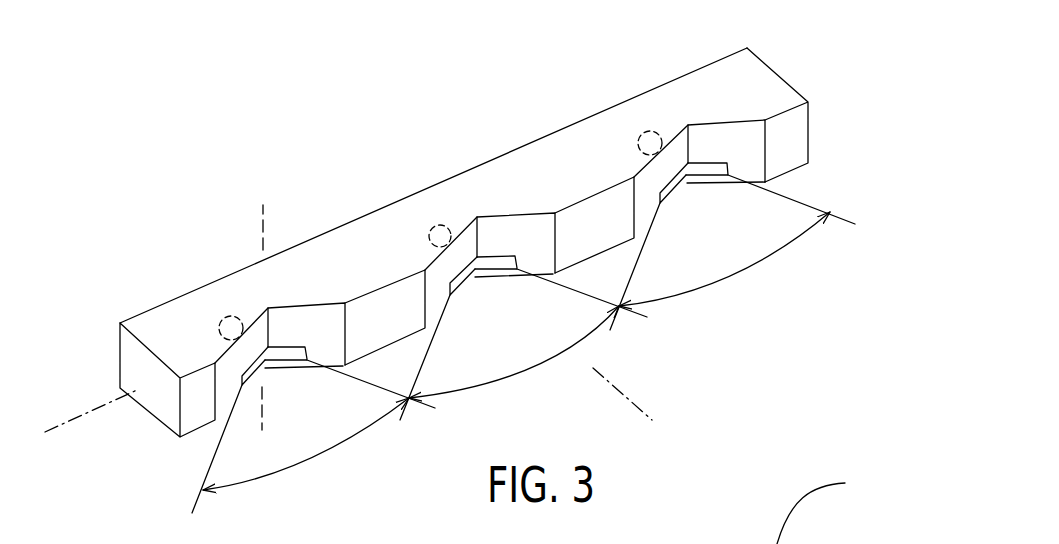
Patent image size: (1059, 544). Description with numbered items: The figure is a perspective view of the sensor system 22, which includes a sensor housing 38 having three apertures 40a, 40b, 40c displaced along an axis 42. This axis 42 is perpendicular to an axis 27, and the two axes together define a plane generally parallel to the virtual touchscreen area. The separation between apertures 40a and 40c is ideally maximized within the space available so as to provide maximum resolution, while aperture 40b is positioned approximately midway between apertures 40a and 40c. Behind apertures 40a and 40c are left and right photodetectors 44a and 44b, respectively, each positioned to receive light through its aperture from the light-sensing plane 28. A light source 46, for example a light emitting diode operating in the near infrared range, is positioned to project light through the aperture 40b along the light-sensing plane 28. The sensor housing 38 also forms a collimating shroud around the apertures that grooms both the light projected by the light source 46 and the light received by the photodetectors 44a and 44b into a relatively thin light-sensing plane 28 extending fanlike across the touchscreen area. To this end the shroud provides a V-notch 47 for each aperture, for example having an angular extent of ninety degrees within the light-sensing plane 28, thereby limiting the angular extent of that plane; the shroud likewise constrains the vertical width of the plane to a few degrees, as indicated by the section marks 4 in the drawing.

The sensor system 22 is at (817, 83).
The axis 27 is at (622, 397).
The light-sensing plane 28 is at (520, 350).
The sensor housing 38 is at (170, 302).
The aperture 40a is at (247, 363).
The aperture 40b is at (492, 262).
The aperture 40c is at (707, 163).
The axis 42 is at (100, 408).
The left photodetector 44a is at (243, 318).
The right photodetector 44b is at (660, 134).
The light source 46 is at (450, 222).
The V-notch 47 is at (203, 443).
The section line 4- 4 is at (263, 205).